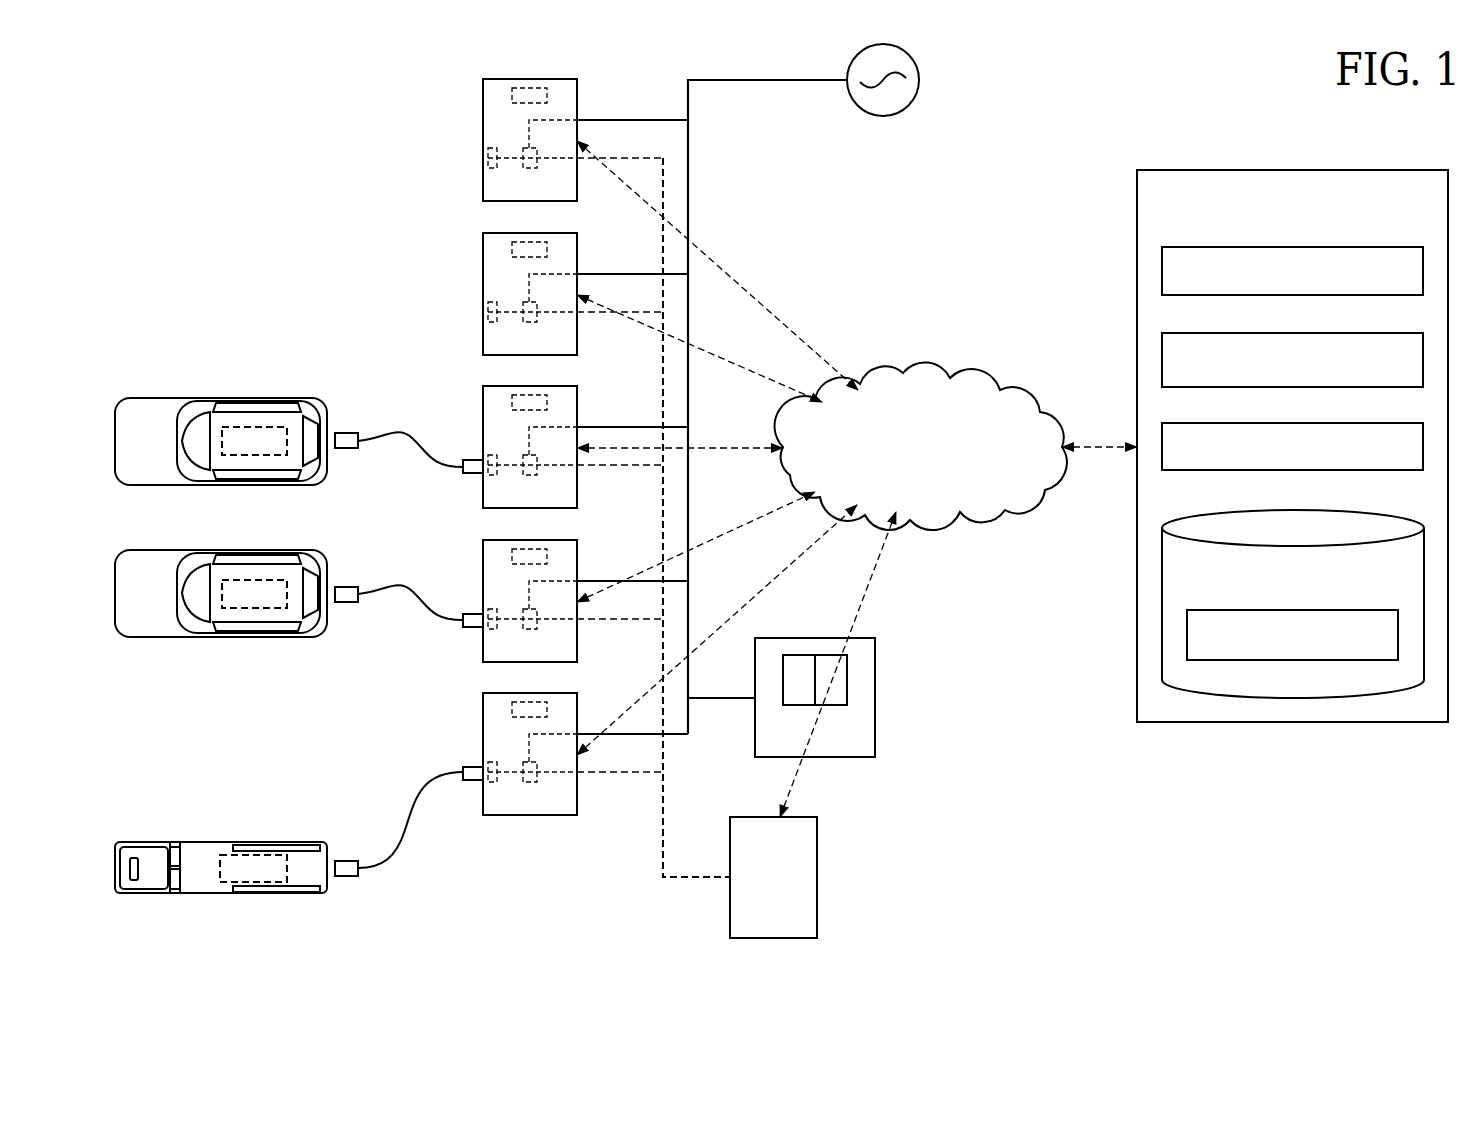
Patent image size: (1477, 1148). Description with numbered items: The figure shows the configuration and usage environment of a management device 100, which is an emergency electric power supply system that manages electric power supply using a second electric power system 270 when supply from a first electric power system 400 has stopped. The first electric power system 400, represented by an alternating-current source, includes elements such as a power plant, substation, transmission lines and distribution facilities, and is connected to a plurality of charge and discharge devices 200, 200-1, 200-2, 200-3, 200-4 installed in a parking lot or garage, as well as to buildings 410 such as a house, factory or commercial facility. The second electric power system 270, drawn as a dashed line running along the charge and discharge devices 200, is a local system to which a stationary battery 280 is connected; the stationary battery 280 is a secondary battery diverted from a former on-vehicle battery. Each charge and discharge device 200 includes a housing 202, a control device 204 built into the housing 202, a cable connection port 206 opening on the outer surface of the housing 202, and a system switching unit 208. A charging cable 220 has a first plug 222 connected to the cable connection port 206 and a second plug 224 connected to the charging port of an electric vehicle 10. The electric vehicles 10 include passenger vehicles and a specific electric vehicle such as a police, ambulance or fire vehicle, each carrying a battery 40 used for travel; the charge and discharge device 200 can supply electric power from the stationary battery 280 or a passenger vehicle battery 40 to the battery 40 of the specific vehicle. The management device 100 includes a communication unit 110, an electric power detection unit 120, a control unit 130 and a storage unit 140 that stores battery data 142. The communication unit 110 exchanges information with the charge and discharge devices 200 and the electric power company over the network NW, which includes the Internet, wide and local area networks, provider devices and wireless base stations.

The electric vehicle 10 is at (218, 398).
The battery 40 is at (272, 456).
The management device 100 is at (1387, 171).
The communication unit 110 is at (1362, 248).
The electric power detection unit 120 is at (1362, 334).
The control unit 130 is at (1362, 424).
The storage unit 140 is at (1362, 512).
The battery data 142 is at (1336, 610).
The charge and discharge device 200 is at (637, 730).
The charge and discharge device 200-1 is at (483, 550).
The charge and discharge device 200-2 is at (483, 397).
The charge and discharge device 200-3 is at (483, 244).
The charge and discharge device 200-4 is at (483, 90).
The housing 202 is at (483, 743).
The control device 204 is at (513, 709).
The cable connection port 206 is at (493, 784).
The system switching unit 208 is at (531, 784).
The charging cable 220 is at (408, 436).
The first plug 222 is at (466, 474).
The second plug 224 is at (345, 450).
The second electric power system 270 is at (689, 880).
The stationary battery 280 is at (818, 878).
The first electric power system 400 is at (920, 80).
The building 410 is at (876, 698).
The network NW is at (984, 375).